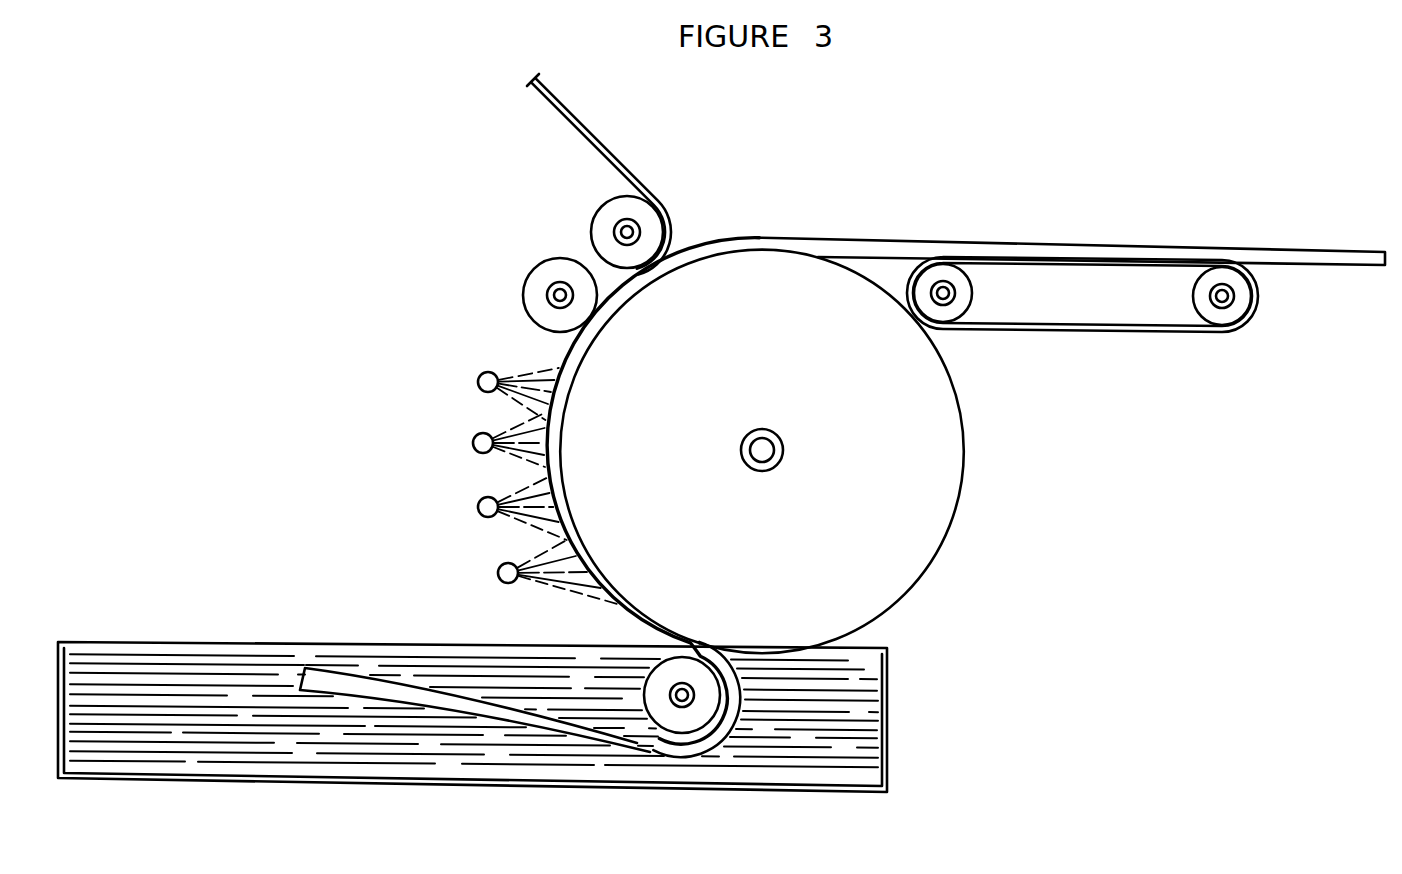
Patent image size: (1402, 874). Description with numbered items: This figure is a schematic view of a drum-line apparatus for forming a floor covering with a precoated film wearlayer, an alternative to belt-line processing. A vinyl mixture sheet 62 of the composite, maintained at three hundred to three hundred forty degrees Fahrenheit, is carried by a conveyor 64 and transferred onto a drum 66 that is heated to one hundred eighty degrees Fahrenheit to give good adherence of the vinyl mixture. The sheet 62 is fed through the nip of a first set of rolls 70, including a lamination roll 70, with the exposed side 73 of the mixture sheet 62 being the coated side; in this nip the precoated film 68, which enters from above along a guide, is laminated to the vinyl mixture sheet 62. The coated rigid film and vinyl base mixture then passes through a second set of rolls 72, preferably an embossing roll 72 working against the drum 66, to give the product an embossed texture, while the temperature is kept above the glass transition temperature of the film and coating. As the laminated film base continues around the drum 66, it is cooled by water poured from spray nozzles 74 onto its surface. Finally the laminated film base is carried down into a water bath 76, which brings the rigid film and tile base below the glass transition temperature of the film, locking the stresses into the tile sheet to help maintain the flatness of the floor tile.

The vinyl mixture sheet 62 is at (1186, 242).
The conveyor 64 is at (1139, 343).
The drum 66 is at (850, 268).
The precoated film 68 is at (619, 160).
The first set of rolls / lamination roll 70 is at (599, 207).
The second set of rolls / embossing roll 72 is at (529, 277).
The exposed side 73 is at (702, 244).
The spray nozzles 74 is at (477, 389).
The water bath 76 is at (255, 657).